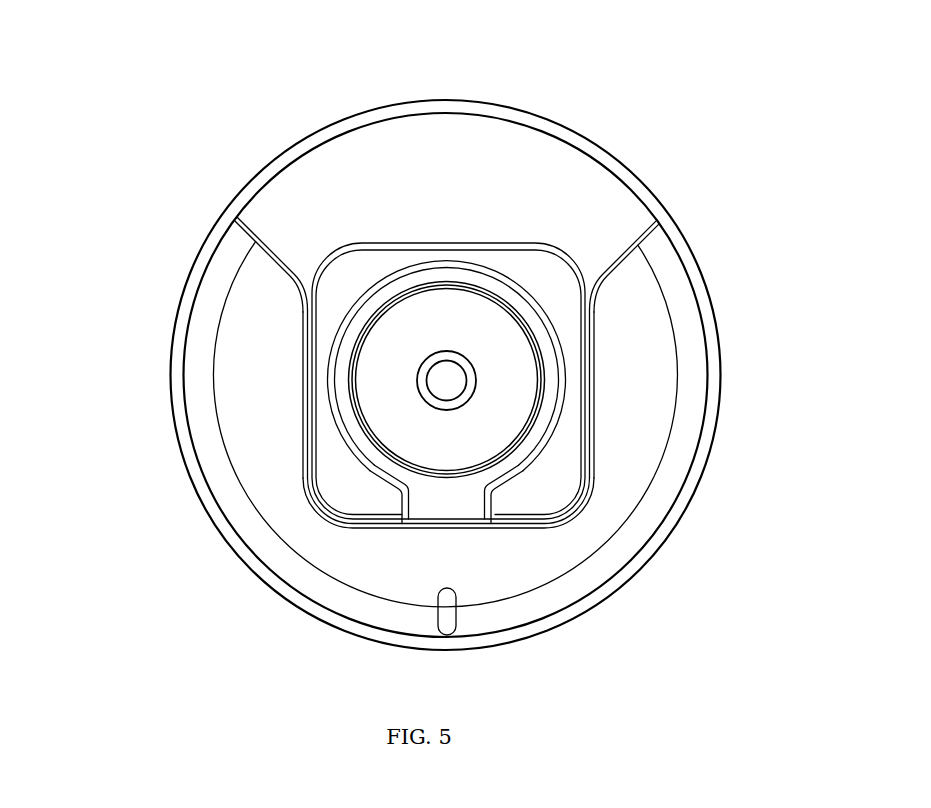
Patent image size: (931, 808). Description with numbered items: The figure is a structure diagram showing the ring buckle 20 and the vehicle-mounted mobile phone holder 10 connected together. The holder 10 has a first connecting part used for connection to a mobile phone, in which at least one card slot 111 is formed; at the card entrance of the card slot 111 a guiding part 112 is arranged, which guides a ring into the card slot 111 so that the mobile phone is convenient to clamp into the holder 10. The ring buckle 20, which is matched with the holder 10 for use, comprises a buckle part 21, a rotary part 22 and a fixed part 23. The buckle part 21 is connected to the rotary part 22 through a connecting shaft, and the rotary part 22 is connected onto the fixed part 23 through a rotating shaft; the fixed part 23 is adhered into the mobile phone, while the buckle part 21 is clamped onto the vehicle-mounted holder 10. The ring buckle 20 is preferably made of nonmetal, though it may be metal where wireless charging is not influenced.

The vehicle-mounted mobile phone holder 10 is at (178, 376).
The card slot 111 is at (590, 345).
The guiding part 112 is at (278, 247).
The ring buckle 20 is at (507, 420).
The buckle part 21 is at (492, 258).
The rotary part 22 is at (422, 281).
The fixed part 23 is at (470, 323).